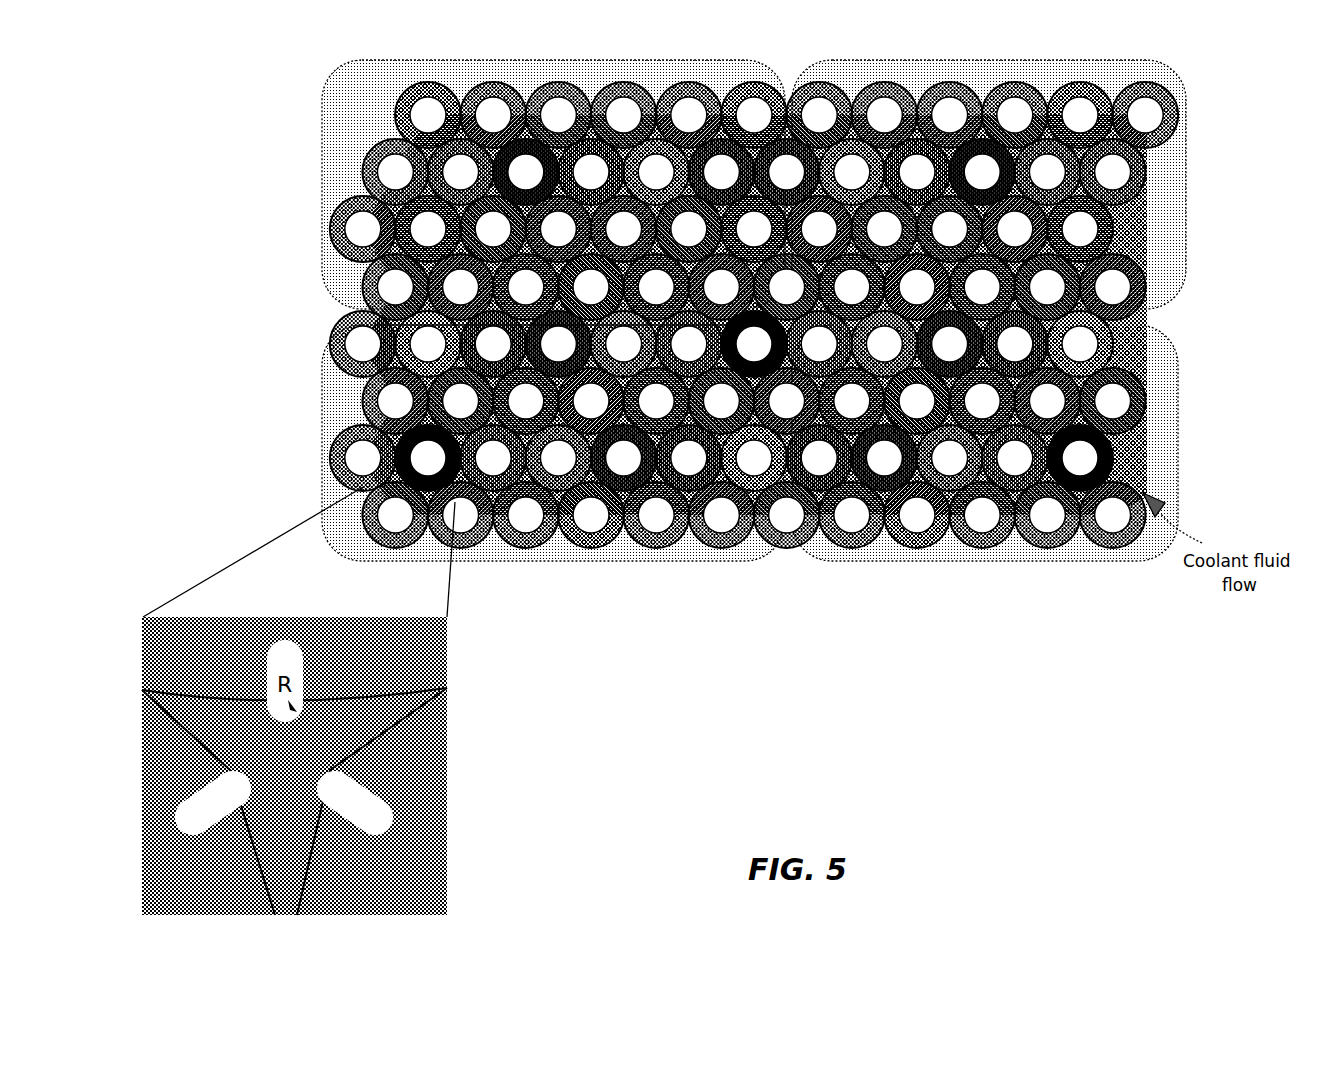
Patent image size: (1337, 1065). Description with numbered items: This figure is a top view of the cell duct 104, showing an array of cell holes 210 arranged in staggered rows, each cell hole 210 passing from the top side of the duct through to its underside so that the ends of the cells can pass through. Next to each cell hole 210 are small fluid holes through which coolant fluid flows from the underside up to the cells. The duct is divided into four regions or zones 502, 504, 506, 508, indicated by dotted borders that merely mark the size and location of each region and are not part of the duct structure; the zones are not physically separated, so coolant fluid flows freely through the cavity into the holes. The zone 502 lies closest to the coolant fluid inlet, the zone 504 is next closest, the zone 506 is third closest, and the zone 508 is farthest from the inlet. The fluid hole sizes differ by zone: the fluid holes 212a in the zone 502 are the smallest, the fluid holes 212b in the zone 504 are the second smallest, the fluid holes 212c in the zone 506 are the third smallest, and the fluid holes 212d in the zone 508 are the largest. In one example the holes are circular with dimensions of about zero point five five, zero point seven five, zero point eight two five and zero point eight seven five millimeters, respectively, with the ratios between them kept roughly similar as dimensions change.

The cell duct 104 is at (352, 488).
The cell holes 210 is at (688, 462).
The fluid holes 212a is at (950, 527).
The fluid holes 212b is at (1117, 98).
The fluid holes 212c is at (493, 527).
The fluid holes 212d is at (765, 160).
The zone 502 is at (1055, 562).
The zone 504 is at (882, 62).
The zone 506 is at (640, 562).
The zone 508 is at (462, 62).